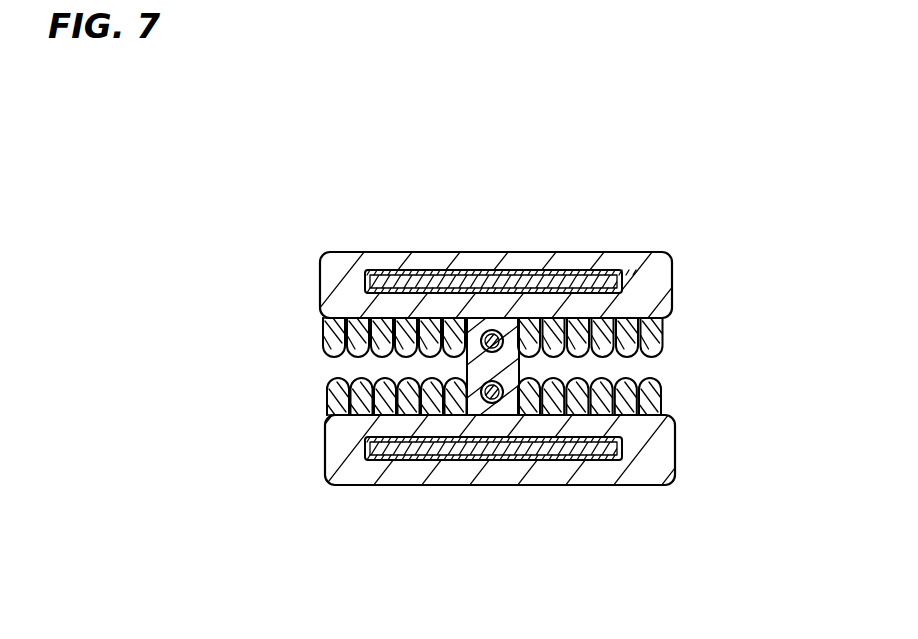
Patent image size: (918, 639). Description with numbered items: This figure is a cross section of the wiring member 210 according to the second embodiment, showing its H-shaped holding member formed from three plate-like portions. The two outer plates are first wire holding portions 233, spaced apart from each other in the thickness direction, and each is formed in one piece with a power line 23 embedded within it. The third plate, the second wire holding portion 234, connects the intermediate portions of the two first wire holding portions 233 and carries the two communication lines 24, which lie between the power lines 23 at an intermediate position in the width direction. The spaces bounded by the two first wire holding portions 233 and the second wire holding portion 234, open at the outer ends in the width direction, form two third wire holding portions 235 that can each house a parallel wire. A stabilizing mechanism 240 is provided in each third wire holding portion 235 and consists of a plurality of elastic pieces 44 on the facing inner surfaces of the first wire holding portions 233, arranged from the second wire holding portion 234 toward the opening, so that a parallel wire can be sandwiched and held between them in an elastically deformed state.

The wiring member 210 is at (301, 152).
The first wire holding portion 233 is at (404, 251).
The power line 23 is at (523, 270).
The stabilizing mechanism 240 is at (492, 372).
The elastic piece 44 is at (326, 355).
The third wire holding portion 235 is at (330, 377).
The second wire holding portion 234 is at (519, 370).
The communication line 24 is at (468, 385).